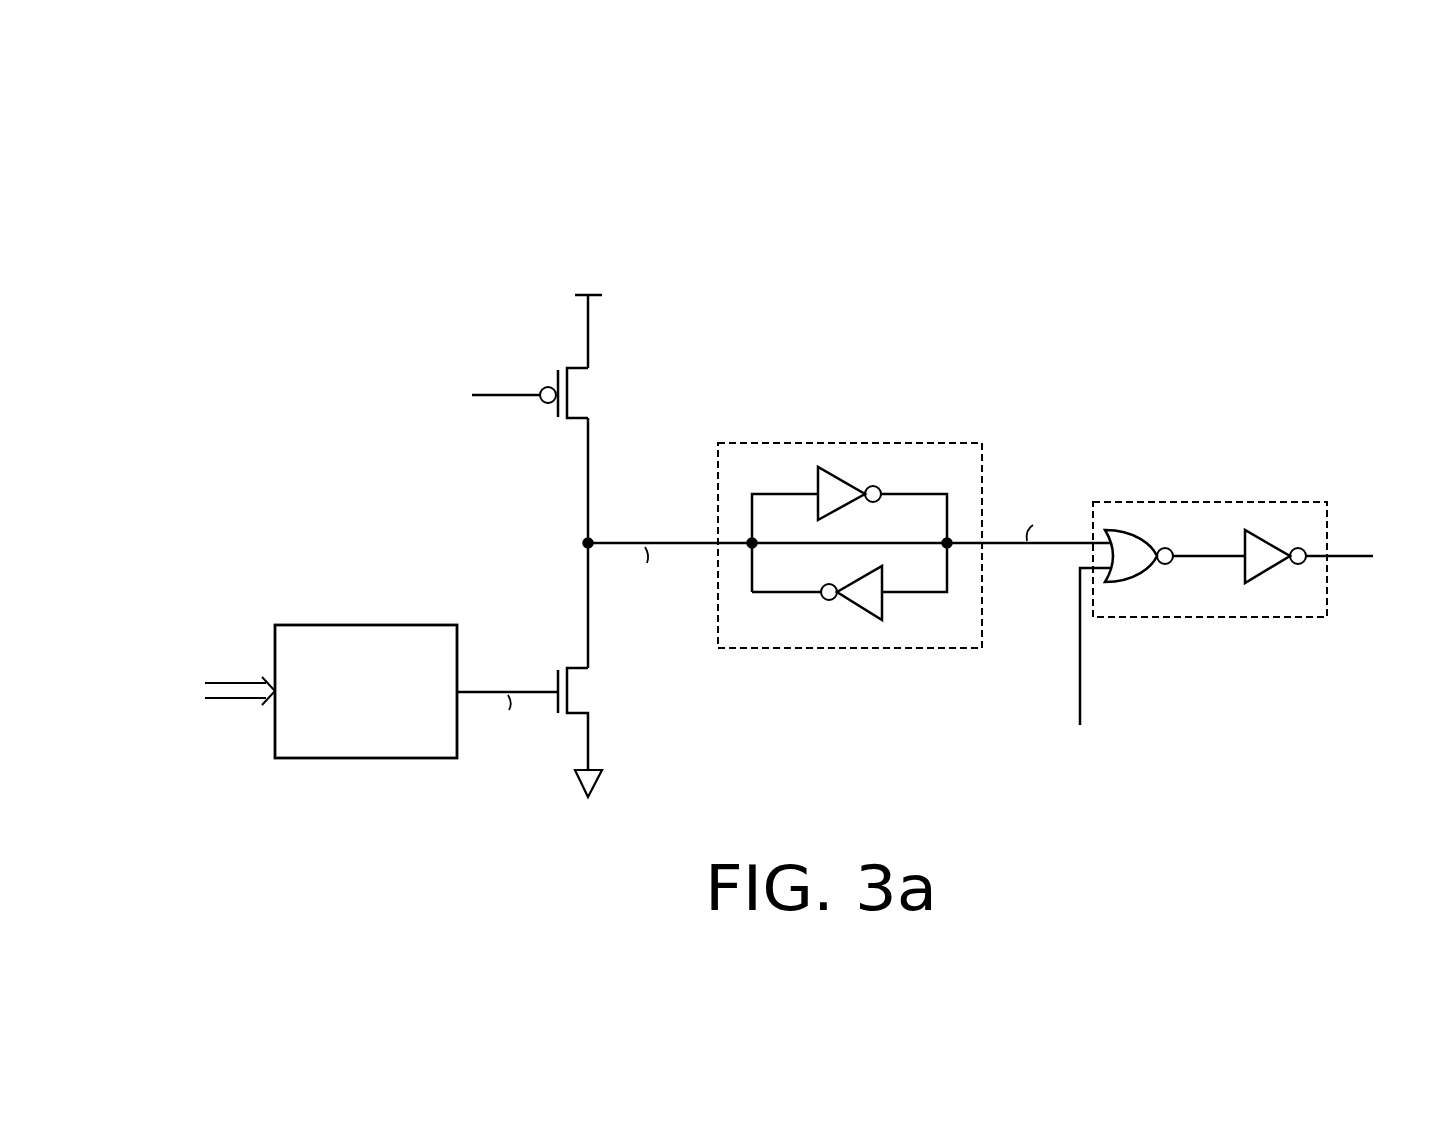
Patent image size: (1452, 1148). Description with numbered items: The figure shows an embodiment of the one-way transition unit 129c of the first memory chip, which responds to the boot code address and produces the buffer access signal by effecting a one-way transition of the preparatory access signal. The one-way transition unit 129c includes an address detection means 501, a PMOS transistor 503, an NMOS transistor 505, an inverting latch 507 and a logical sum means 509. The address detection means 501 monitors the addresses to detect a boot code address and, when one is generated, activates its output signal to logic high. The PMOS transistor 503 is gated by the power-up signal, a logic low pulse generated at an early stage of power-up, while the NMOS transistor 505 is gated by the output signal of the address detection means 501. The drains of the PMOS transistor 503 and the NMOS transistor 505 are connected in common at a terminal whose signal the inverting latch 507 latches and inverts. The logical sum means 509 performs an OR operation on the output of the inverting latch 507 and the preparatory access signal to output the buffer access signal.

The one-way transition unit 129c is at (781, 461).
The address detection means 501 is at (376, 625).
The PMOS transistor 503 is at (575, 396).
The NMOS transistor 505 is at (575, 692).
The inverting latch 507 is at (878, 443).
The logical sum means 509 is at (1243, 502).